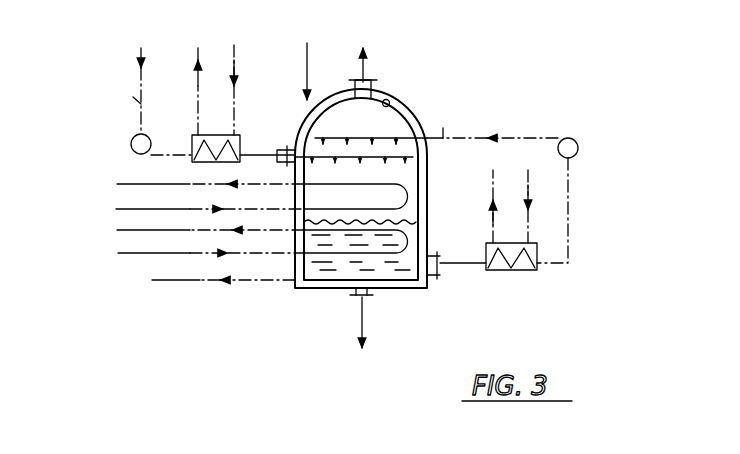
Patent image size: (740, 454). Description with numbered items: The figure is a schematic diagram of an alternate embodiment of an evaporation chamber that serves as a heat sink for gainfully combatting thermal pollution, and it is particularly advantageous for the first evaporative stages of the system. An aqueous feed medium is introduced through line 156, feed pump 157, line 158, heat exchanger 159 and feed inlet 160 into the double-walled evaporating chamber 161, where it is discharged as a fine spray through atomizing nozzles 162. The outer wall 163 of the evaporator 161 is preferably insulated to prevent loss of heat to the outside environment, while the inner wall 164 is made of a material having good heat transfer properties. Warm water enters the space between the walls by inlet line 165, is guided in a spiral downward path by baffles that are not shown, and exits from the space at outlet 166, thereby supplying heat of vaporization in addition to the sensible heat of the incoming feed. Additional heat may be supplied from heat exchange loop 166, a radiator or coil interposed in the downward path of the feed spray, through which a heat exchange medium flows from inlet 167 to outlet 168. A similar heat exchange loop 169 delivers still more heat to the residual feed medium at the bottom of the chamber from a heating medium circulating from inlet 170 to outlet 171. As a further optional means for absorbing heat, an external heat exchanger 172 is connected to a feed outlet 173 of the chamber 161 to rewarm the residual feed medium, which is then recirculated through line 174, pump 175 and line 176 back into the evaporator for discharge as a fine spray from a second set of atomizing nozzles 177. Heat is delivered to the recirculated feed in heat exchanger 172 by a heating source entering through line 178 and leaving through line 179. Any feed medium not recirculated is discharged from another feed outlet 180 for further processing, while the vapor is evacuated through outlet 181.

The line 156 is at (141, 50).
The feed pump 157 is at (131, 145).
The line 158 is at (160, 155).
The heat exchanger 159 is at (240, 135).
The feed inlet 160 is at (285, 150).
The double-walled evaporating chamber 161 is at (413, 99).
The atomizing nozzles 162 is at (312, 161).
The outer wall 163 is at (405, 93).
The inner wall 164 is at (386, 100).
The inlet line 165 is at (307, 60).
The outlet / heat exchange loop 166 is at (368, 186).
The inlet 167 is at (116, 209).
The outlet 168 is at (117, 184).
The heat exchange loop 169 is at (413, 240).
The inlet 170 is at (118, 253).
The outlet 171 is at (117, 230).
The external heat exchanger 172 is at (515, 272).
The feed outlet 173 is at (440, 280).
The line 174 is at (568, 195).
The pump 175 is at (574, 141).
The line 176 is at (443, 128).
The second set of atomizing nozzles 177 is at (395, 137).
The line 178 is at (537, 243).
The line 179 is at (493, 178).
The feed outlet 180 is at (356, 298).
The outlet 181 is at (353, 78).